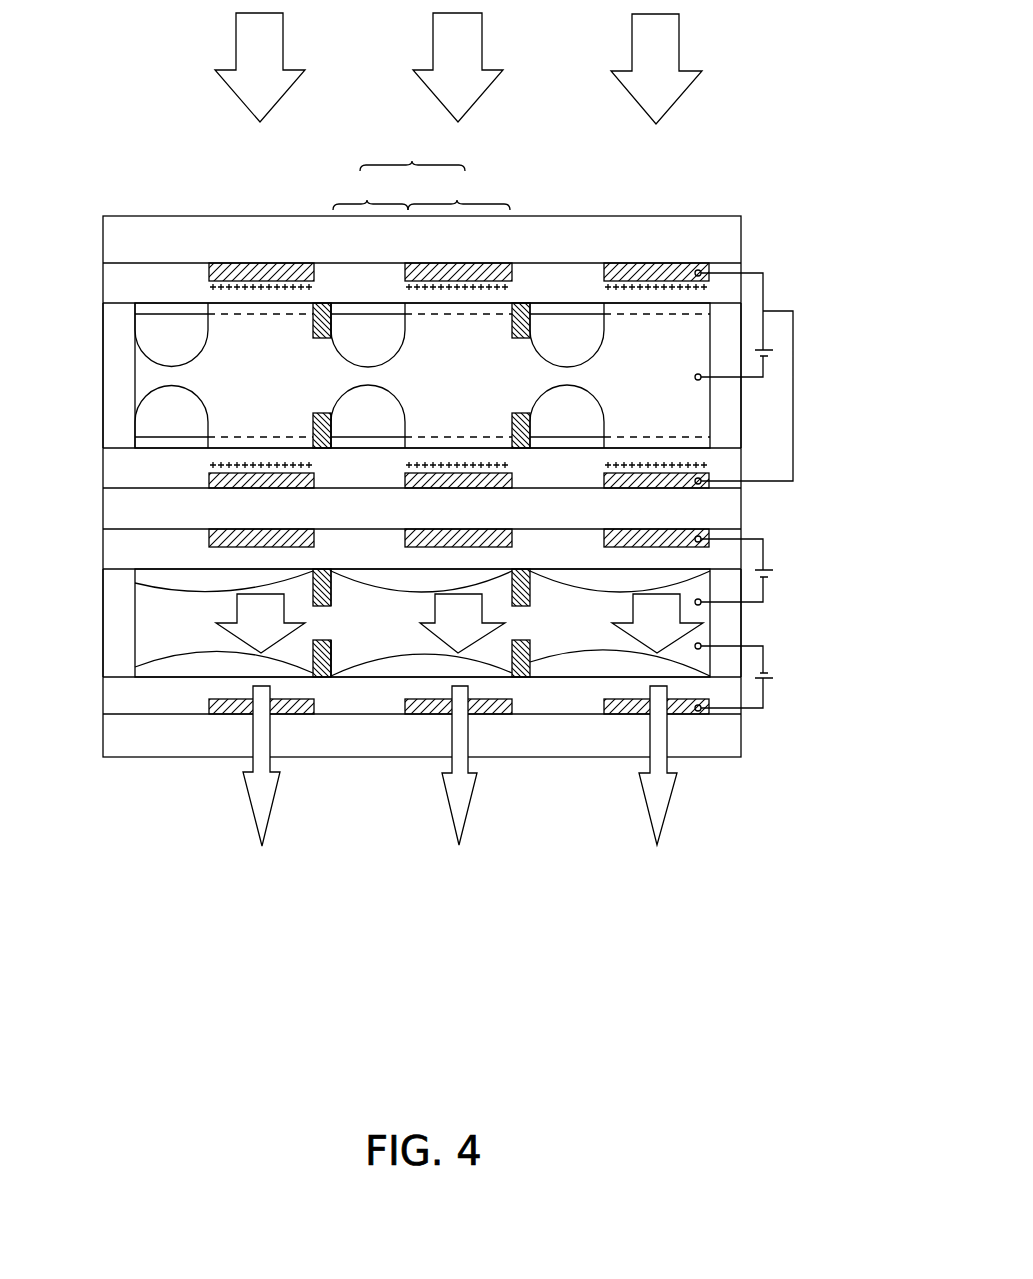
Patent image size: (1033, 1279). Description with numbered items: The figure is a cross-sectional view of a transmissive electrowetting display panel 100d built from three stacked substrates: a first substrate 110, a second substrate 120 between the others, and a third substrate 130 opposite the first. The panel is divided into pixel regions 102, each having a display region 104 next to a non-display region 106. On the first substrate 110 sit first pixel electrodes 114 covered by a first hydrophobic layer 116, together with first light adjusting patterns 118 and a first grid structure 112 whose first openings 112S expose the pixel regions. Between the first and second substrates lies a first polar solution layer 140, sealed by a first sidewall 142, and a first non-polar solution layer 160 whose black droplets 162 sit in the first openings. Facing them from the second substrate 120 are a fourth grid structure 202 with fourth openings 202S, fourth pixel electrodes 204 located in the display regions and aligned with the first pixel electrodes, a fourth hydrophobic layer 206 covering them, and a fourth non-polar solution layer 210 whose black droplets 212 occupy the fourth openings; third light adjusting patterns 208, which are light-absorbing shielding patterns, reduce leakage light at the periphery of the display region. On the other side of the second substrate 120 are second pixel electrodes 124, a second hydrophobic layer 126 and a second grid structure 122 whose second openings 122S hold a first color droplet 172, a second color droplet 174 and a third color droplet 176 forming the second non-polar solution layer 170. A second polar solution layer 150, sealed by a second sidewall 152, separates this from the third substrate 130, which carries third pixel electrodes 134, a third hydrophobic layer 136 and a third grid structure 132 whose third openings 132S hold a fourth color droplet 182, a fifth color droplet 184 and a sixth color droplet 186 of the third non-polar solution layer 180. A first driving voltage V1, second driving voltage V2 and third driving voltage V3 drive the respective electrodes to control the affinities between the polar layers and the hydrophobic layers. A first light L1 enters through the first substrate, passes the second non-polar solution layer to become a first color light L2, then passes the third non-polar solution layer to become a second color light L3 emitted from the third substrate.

The display panel 100d is at (795, 1123).
The first substrate 110 is at (112, 230).
The first pixel electrodes 114 is at (209, 273).
The first hydrophobic layer 116 is at (115, 290).
The first light adjusting patterns 118 is at (133, 308).
The first sidewall 142 is at (113, 352).
The first polar solution layer 140 is at (131, 383).
The first non-polar solution layer 160 is at (369, 252).
The black droplets 162 is at (348, 327).
The fourth non-polar solution layer 210 is at (369, 405).
The black droplets 212 is at (350, 408).
The first grid structure 112 is at (527, 303).
The first openings 112S is at (446, 330).
The fourth grid structure 202 is at (520, 413).
The fourth openings 202S is at (493, 422).
The third light adjusting patterns 208 is at (128, 442).
The fourth hydrophobic layer 206 is at (122, 462).
The fourth pixel electrodes 204 is at (209, 480).
The second substrate 120 is at (115, 502).
The second pixel electrodes 124 is at (209, 538).
The second hydrophobic layer 126 is at (117, 559).
The second sidewall 152 is at (112, 600).
The second polar solution layer 150 is at (133, 624).
The second grid structure 122 is at (531, 606).
The second openings 122S is at (374, 646).
The third grid structure 132 is at (520, 677).
The third openings 132S is at (340, 664).
The second non-polar solution layer 170 is at (475, 763).
The first color droplet 172 is at (205, 588).
The second color droplet 174 is at (394, 585).
The third color droplet 176 is at (660, 577).
The third non-polar solution layer 180 is at (466, 838).
The fourth color droplet 182 is at (218, 658).
The fifth color droplet 184 is at (422, 666).
The sixth color droplet 186 is at (622, 666).
The third pixel electrodes 134 is at (209, 704).
The third hydrophobic layer 136 is at (112, 707).
The third substrate 130 is at (110, 737).
The pixel regions 102 is at (412, 152).
The display region 104 is at (459, 191).
The non-display region 106 is at (370, 191).
The first light L1 is at (673, 40).
The first color light L2 is at (670, 613).
The second color light L3 is at (660, 795).
The first driving voltage V1 is at (781, 337).
The second driving voltage V2 is at (783, 561).
The third driving voltage V3 is at (783, 664).